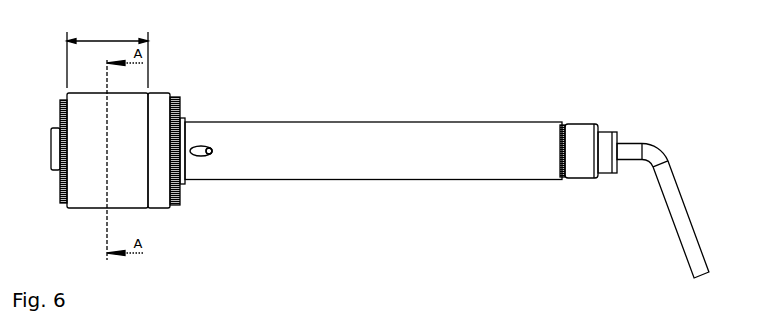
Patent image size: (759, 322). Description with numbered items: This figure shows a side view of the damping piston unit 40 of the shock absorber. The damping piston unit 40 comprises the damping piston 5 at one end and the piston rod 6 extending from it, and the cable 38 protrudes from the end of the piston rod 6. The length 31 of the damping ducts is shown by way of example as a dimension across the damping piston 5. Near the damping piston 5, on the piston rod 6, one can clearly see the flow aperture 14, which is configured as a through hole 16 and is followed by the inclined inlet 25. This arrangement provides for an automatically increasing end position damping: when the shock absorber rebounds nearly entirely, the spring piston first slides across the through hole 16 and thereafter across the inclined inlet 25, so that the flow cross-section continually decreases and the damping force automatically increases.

The damping piston 5 is at (162, 93).
The piston rod 6 is at (462, 122).
The flow aperture 14 is at (214, 152).
The through hole 16 is at (212, 148).
The inclined inlet 25 is at (195, 146).
The length 31 is at (112, 37).
The cable 38 is at (677, 208).
The damping piston unit 40 is at (552, 65).